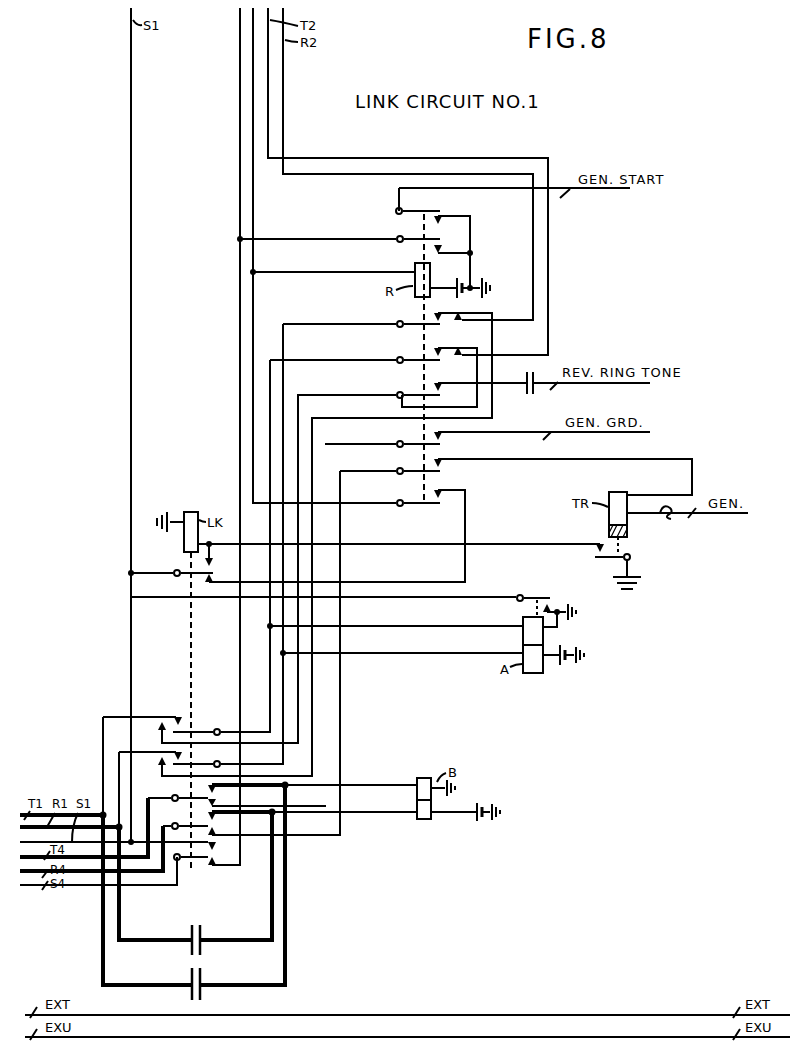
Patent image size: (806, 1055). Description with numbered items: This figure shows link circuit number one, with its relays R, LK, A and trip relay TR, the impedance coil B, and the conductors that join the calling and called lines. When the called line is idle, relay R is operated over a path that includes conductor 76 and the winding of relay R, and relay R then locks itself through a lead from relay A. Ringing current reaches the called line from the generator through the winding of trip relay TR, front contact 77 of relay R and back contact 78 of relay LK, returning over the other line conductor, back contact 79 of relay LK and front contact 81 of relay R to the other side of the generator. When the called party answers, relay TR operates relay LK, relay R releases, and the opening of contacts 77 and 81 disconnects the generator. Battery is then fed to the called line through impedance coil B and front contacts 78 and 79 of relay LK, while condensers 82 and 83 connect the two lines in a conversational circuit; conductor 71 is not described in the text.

The conductor 71 is at (239, 31).
The conductor 76 is at (252, 50).
The front contact of relay R 77 is at (447, 465).
The back contact of relay LK 78 is at (189, 821).
The back contact of relay LK 79 is at (189, 793).
The front contact of relay R 81 is at (445, 440).
The condenser 82 is at (206, 934).
The condenser 83 is at (206, 982).